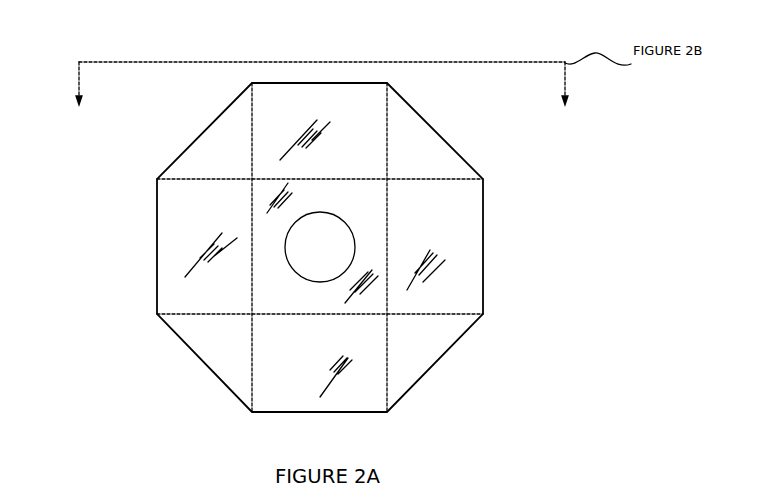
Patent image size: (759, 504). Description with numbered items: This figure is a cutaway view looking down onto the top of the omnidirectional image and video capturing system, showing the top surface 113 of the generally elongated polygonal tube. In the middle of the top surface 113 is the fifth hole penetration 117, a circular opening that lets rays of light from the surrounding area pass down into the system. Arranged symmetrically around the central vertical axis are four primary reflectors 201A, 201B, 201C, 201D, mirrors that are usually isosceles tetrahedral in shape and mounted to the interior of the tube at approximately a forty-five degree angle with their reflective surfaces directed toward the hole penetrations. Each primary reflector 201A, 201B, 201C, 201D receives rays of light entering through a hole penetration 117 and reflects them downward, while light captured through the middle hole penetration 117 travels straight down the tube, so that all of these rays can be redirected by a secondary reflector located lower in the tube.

The top surface 113 is at (205, 146).
The hole penetration 117 is at (350, 230).
The primary reflector 201A is at (442, 238).
The primary reflector 201B is at (313, 103).
The primary reflector 201C is at (170, 196).
The primary reflector 201D is at (282, 390).